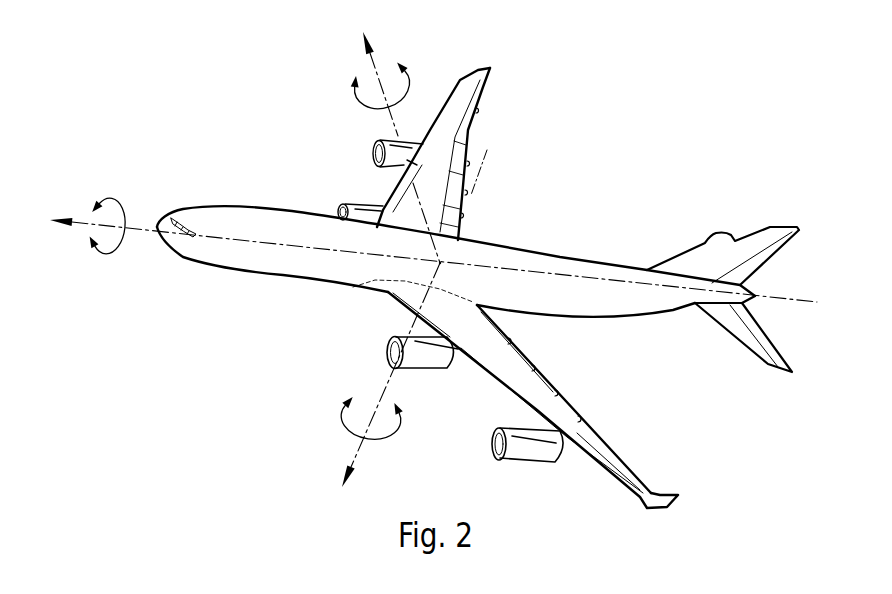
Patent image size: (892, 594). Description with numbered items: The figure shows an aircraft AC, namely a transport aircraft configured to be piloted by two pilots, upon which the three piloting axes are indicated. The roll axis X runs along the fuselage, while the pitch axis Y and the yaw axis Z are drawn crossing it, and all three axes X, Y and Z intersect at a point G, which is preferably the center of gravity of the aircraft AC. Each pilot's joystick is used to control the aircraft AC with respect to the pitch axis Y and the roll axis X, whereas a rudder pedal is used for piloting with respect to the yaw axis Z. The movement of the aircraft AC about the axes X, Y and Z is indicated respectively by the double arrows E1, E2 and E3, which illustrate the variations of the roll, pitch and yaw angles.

The aircraft AC is at (270, 276).
The roll axis X is at (433, 260).
The pitch axis Y is at (401, 137).
The yaw axis Z is at (391, 381).
The point G is at (444, 262).
The double arrow E1 is at (123, 205).
The double arrow E2 is at (372, 107).
The double arrow E3 is at (378, 438).